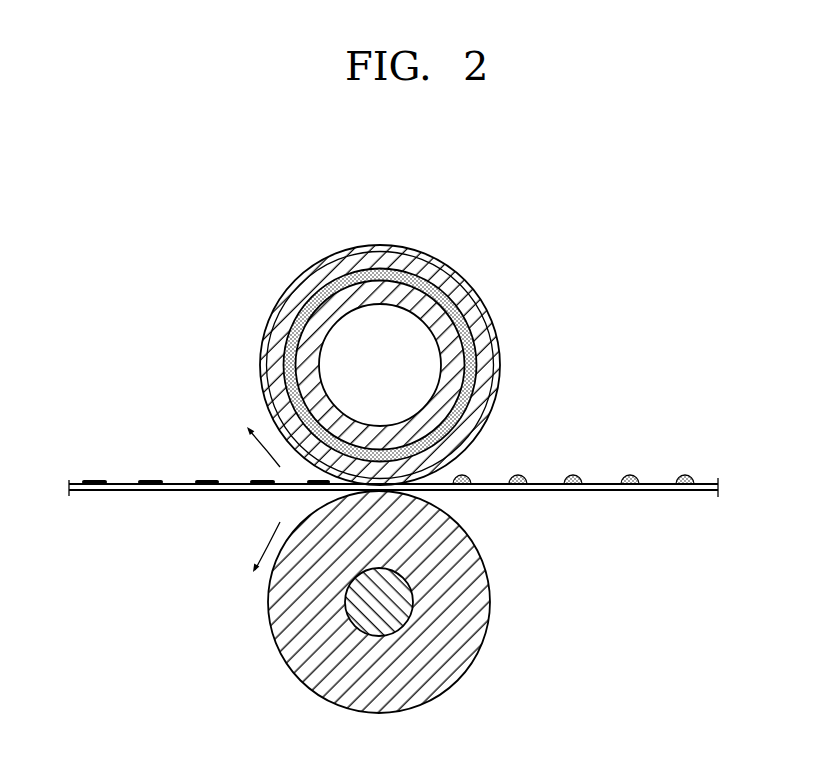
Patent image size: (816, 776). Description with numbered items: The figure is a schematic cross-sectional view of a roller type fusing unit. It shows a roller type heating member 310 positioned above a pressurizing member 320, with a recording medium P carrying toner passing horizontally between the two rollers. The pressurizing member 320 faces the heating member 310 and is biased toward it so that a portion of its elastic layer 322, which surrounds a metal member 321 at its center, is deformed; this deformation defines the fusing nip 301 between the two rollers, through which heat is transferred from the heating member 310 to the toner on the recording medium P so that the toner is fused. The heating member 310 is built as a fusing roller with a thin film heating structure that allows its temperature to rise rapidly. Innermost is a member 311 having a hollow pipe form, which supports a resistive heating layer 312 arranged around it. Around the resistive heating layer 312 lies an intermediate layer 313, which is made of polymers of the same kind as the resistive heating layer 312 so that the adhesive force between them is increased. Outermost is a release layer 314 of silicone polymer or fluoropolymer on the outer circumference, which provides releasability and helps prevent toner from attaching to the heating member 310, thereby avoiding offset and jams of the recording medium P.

The heating member 310 is at (441, 365).
The member that supports the resistive heating layer 311 is at (580, 300).
The resistive heating layer 312 is at (468, 360).
The intermediate layer 313 is at (480, 340).
The release layer 314 is at (490, 313).
The pressurizing member 320 is at (432, 602).
The metal member 321 is at (408, 608).
The elastic layer 322 is at (473, 577).
The fusing nip 301 is at (474, 464).
The recording medium P is at (124, 491).